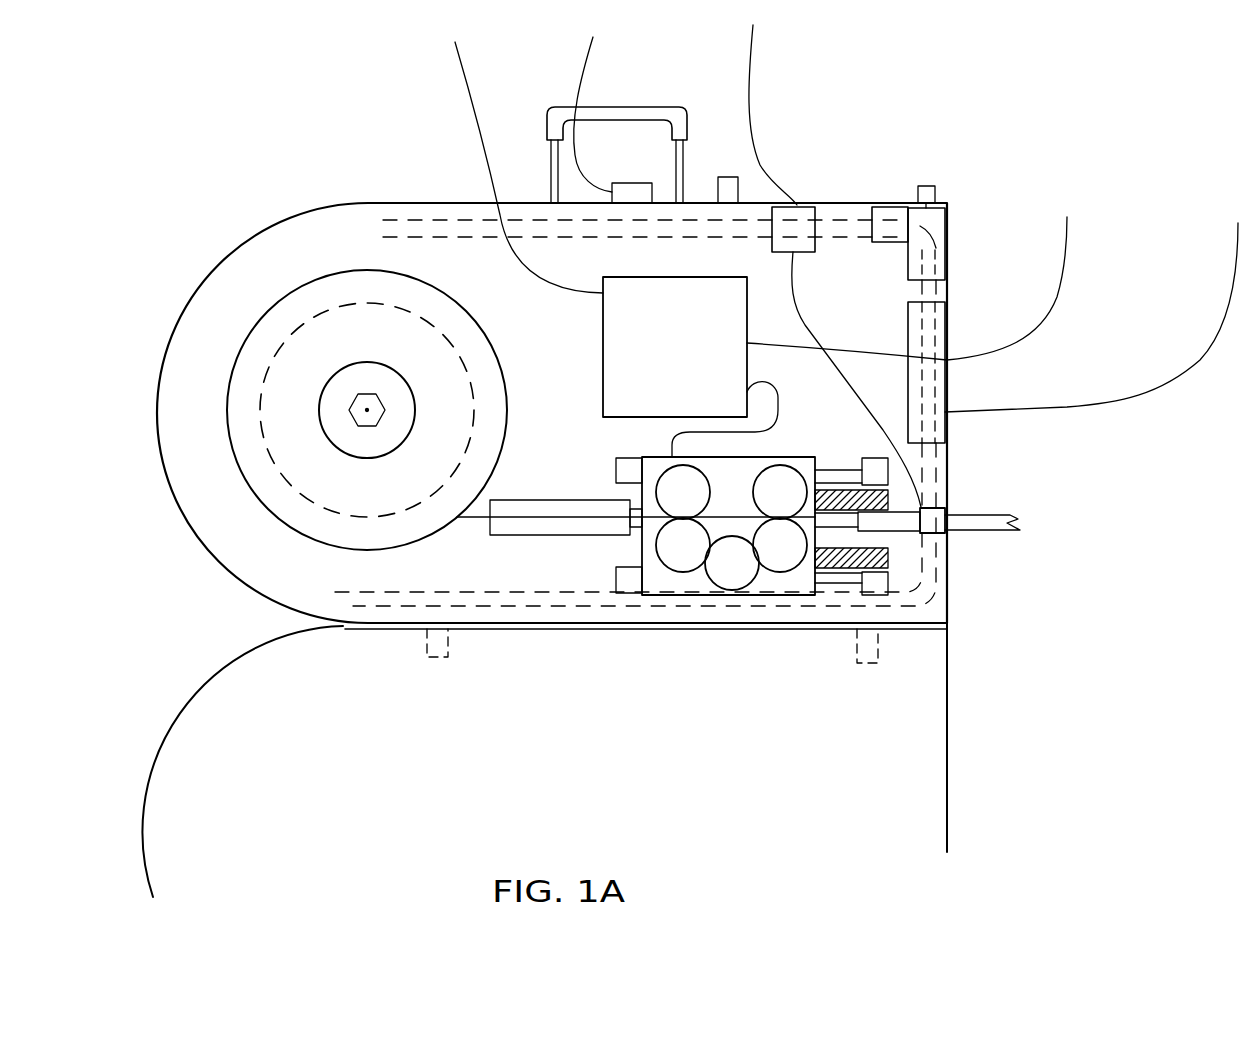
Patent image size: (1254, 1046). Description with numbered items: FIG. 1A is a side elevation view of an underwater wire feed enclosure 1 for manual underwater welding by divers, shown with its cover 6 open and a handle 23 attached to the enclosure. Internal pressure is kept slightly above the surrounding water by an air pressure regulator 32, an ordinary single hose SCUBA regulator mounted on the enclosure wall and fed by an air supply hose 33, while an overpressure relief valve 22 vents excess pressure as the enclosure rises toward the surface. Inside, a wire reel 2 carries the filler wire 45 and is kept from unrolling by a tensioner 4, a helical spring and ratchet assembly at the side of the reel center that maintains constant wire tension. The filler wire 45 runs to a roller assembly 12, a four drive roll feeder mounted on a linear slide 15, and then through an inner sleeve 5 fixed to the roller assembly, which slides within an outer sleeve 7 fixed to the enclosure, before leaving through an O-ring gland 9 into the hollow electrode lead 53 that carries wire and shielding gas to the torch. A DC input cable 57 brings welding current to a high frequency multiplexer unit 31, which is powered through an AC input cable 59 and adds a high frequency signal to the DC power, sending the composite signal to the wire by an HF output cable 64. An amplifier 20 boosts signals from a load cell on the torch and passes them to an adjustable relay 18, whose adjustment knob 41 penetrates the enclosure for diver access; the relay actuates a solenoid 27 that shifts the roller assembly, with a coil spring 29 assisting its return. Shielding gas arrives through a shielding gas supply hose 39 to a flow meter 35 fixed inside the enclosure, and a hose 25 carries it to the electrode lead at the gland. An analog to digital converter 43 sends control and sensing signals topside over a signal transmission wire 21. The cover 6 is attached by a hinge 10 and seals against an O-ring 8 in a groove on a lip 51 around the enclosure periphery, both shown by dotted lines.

The enclosure 1 is at (333, 202).
The wire reel 2 is at (265, 503).
The tensioner 4 is at (320, 415).
The inner sleeve 5 is at (845, 492).
The cover 6 is at (950, 757).
The outer sleeve 7 is at (897, 523).
The O-ring 8 is at (552, 603).
The O-ring gland 9 is at (930, 525).
The hinge 10 is at (425, 647).
The roller assembly 12 is at (680, 585).
The linear slide 15 is at (873, 587).
The adjustable relay 18 is at (935, 245).
The amplifier 20 is at (890, 220).
The signal transmission wire 21 is at (1158, 393).
The overpressure relief valve 22 is at (728, 180).
The handle 23 is at (675, 113).
The hose 25 is at (923, 473).
The solenoid 27 is at (558, 533).
The coil spring 29 is at (838, 572).
The high frequency multiplexer unit 31 is at (603, 343).
The air pressure regulator 32 is at (626, 188).
The air supply hose 33 is at (580, 80).
The flow meter 35 is at (807, 223).
The shielding gas supply hose 39 is at (760, 100).
The adjustment knob 41 is at (927, 187).
The analog to digital converter 43 is at (945, 388).
The filler wire 45 is at (477, 517).
The lip 51 is at (417, 233).
The electrode lead 53 is at (1002, 515).
The DC input cable 57 is at (1065, 277).
The AC input cable 59 is at (470, 78).
The HF output cable 64 is at (780, 405).